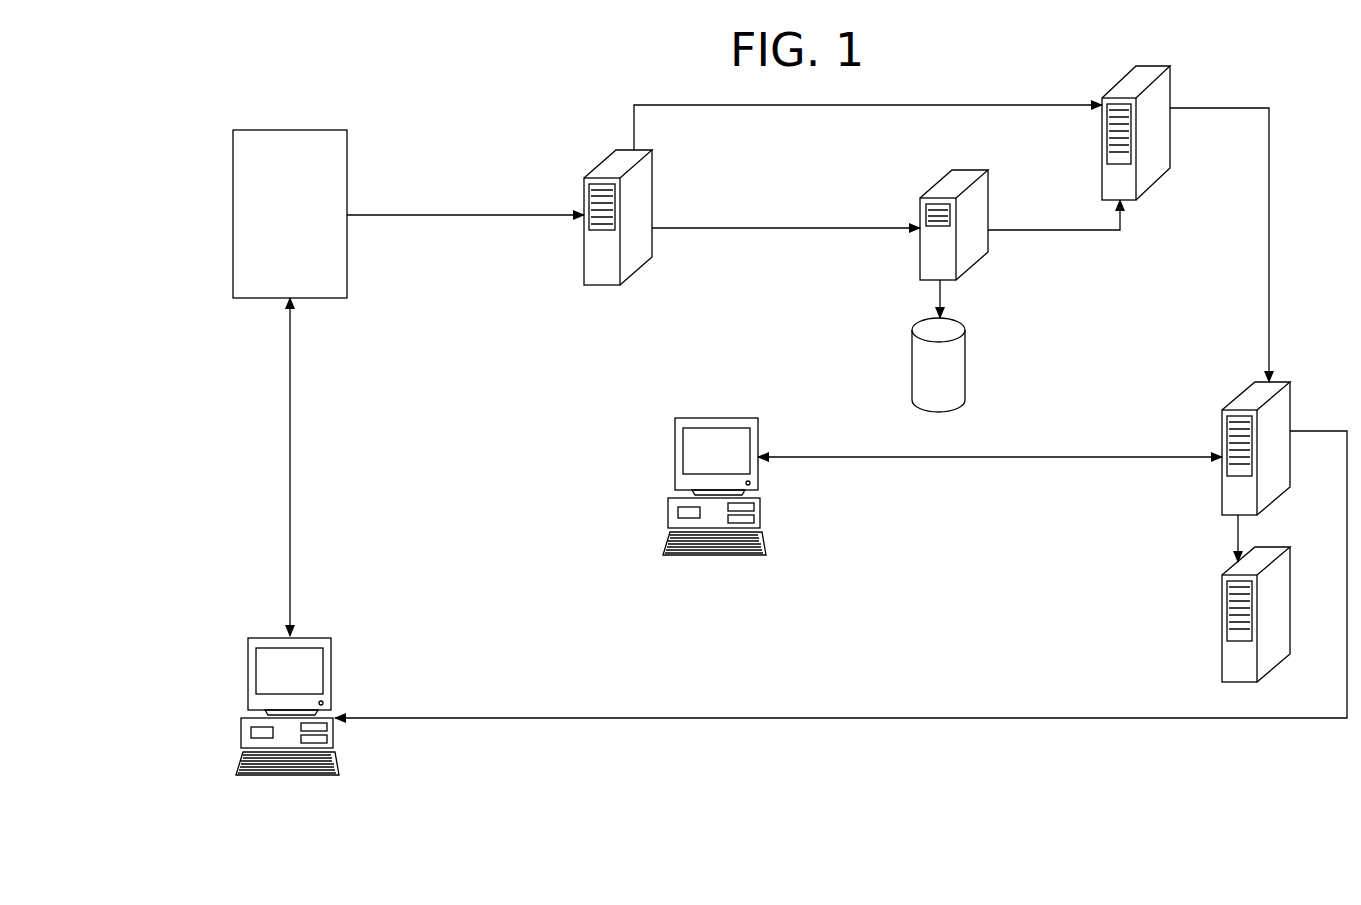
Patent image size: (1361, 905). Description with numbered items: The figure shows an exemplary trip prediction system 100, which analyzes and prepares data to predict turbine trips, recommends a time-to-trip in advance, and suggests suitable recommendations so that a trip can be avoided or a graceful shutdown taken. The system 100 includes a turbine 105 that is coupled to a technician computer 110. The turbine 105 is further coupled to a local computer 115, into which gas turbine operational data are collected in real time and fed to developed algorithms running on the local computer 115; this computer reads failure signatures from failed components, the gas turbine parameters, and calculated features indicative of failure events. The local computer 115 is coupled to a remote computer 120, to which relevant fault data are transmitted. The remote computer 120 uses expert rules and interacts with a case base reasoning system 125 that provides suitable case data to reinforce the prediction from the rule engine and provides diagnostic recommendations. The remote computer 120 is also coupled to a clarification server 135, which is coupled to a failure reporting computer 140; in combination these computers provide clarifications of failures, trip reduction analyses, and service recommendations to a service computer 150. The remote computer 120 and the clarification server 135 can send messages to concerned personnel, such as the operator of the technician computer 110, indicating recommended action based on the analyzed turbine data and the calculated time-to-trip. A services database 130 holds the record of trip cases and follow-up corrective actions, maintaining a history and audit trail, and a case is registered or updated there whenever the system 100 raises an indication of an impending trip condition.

The trip prediction system 100 is at (504, 106).
The turbine 105 is at (347, 168).
The technician computer 110 is at (290, 780).
The local computer 115 is at (602, 290).
The remote computer 120 is at (1155, 183).
The case base reasoning (CBR) system 125 is at (974, 265).
The services database 130 is at (965, 365).
The clarification server 135 is at (1222, 437).
The failure reporting computer 140 is at (1222, 630).
The service computer 150 is at (715, 560).